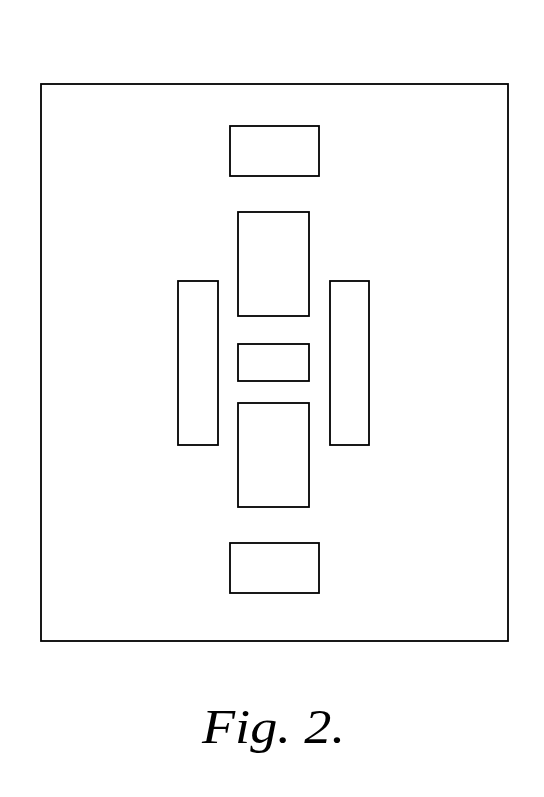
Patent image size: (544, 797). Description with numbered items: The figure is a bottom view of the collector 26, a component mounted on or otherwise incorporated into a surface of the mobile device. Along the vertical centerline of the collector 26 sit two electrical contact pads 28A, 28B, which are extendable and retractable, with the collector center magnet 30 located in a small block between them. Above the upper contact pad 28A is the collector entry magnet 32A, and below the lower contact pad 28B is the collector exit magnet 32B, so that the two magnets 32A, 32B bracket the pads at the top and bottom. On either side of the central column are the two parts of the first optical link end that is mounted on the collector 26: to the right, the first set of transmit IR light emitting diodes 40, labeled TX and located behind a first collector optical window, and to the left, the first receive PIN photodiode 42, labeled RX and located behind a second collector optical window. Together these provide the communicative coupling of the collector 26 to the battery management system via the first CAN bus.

The collector 26 is at (416, 74).
The collector entry magnet 32A is at (331, 143).
The electrical contact pad 28A is at (321, 230).
The first receive PIN photodiode 42 is at (175, 337).
The first set of transmit IR light emitting diodes 40 is at (379, 334).
The collector center magnet 30 is at (259, 374).
The electrical contact pad 28B is at (318, 494).
The collector exit magnet 32B is at (326, 569).